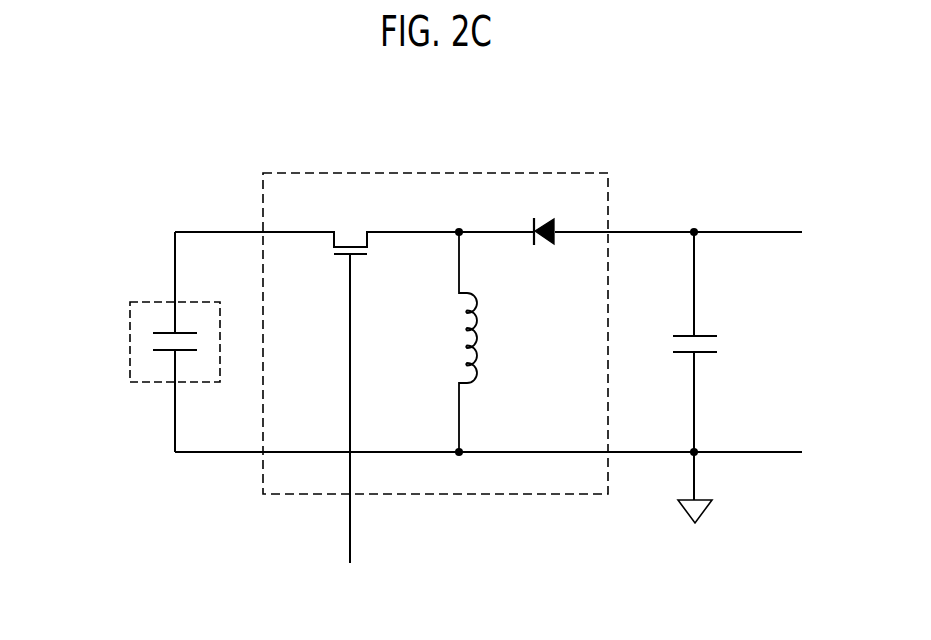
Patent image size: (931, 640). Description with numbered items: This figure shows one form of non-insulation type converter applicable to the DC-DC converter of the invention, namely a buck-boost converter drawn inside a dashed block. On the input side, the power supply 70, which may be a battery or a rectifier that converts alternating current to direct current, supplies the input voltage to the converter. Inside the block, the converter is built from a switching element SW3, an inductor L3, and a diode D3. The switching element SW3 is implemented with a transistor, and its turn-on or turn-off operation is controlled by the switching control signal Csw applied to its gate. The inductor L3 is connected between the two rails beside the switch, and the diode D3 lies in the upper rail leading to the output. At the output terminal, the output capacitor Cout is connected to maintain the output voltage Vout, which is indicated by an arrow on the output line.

The power supply 70 is at (130, 335).
The switching element SW3 is at (350, 385).
The switching control signal Csw is at (350, 425).
The inductor L3 is at (479, 342).
The diode D3 is at (543, 218).
The output voltage Vout is at (685, 218).
The output capacitor Cout is at (719, 375).